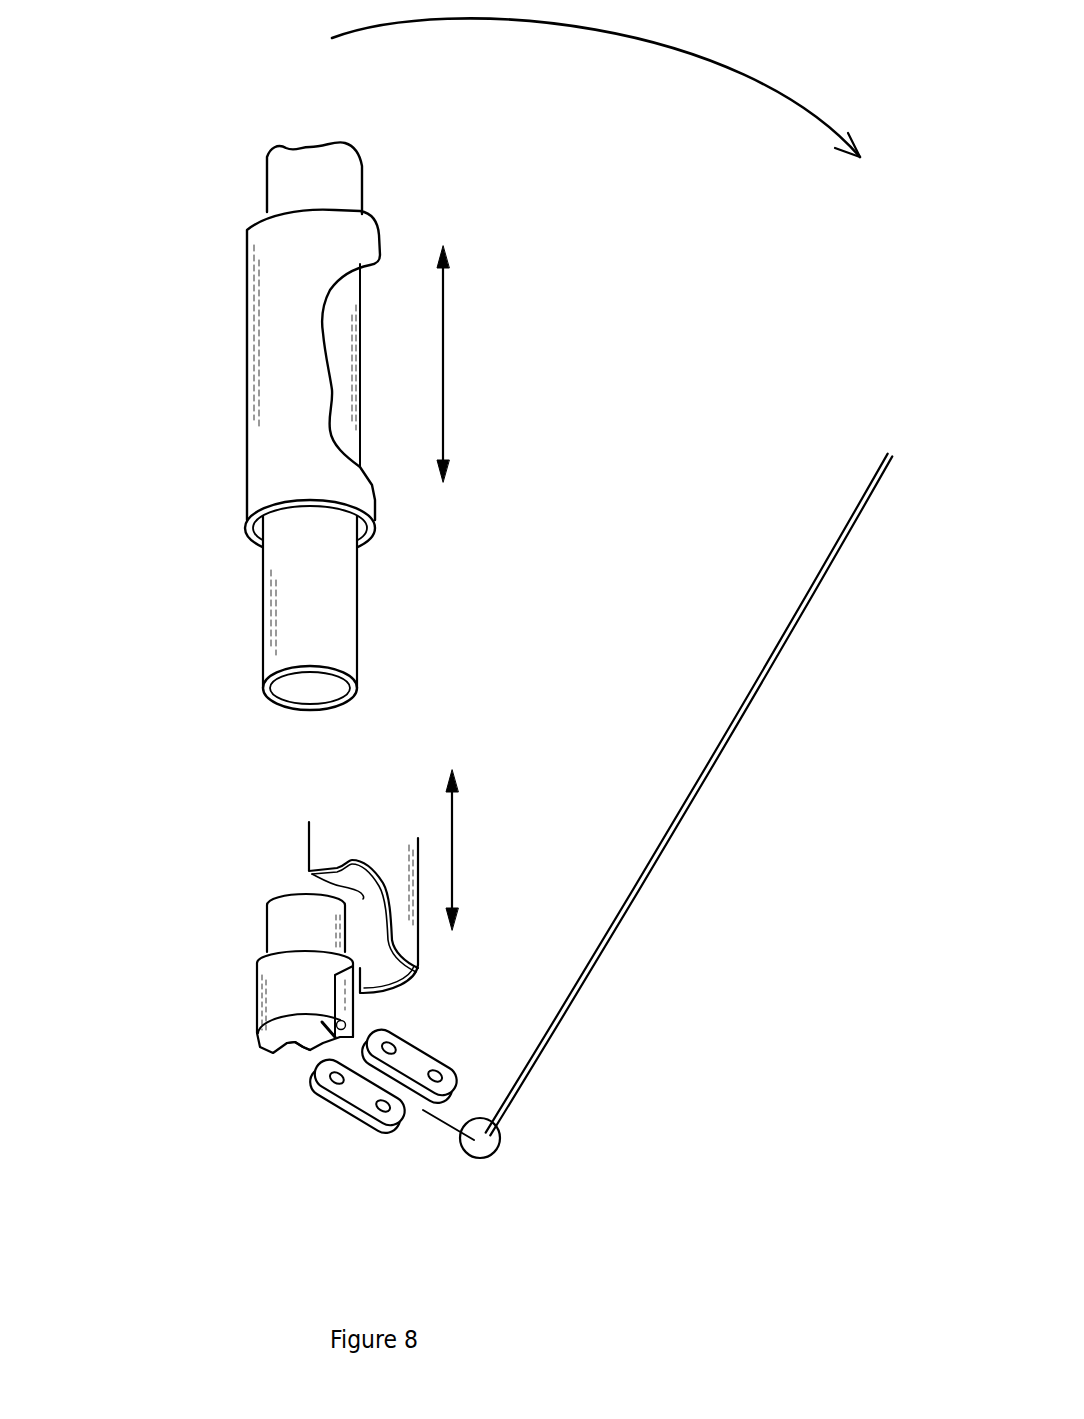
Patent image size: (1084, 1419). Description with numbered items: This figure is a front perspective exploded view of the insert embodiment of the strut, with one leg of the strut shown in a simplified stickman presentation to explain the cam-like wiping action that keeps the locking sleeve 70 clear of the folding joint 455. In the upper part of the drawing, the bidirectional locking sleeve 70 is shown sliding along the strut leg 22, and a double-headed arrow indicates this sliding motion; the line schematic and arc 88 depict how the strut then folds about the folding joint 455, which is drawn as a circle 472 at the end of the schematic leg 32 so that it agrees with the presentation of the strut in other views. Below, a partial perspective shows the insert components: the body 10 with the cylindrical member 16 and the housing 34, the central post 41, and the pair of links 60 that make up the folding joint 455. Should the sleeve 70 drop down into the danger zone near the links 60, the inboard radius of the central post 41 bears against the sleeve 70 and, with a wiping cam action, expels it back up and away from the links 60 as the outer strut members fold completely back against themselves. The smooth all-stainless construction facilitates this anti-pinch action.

The locking sleeve 70 is at (276, 248).
The arc 88 is at (607, 28).
The strut leg 22 is at (293, 553).
The rod 32 is at (696, 788).
The cylindrical member 16 is at (263, 962).
The housing 34 is at (293, 985).
The bottom rim 10 is at (273, 1043).
The central post 41 is at (312, 1043).
The links 60 is at (413, 1092).
The circle 472 is at (482, 1157).
The folding joint 455 is at (320, 1139).